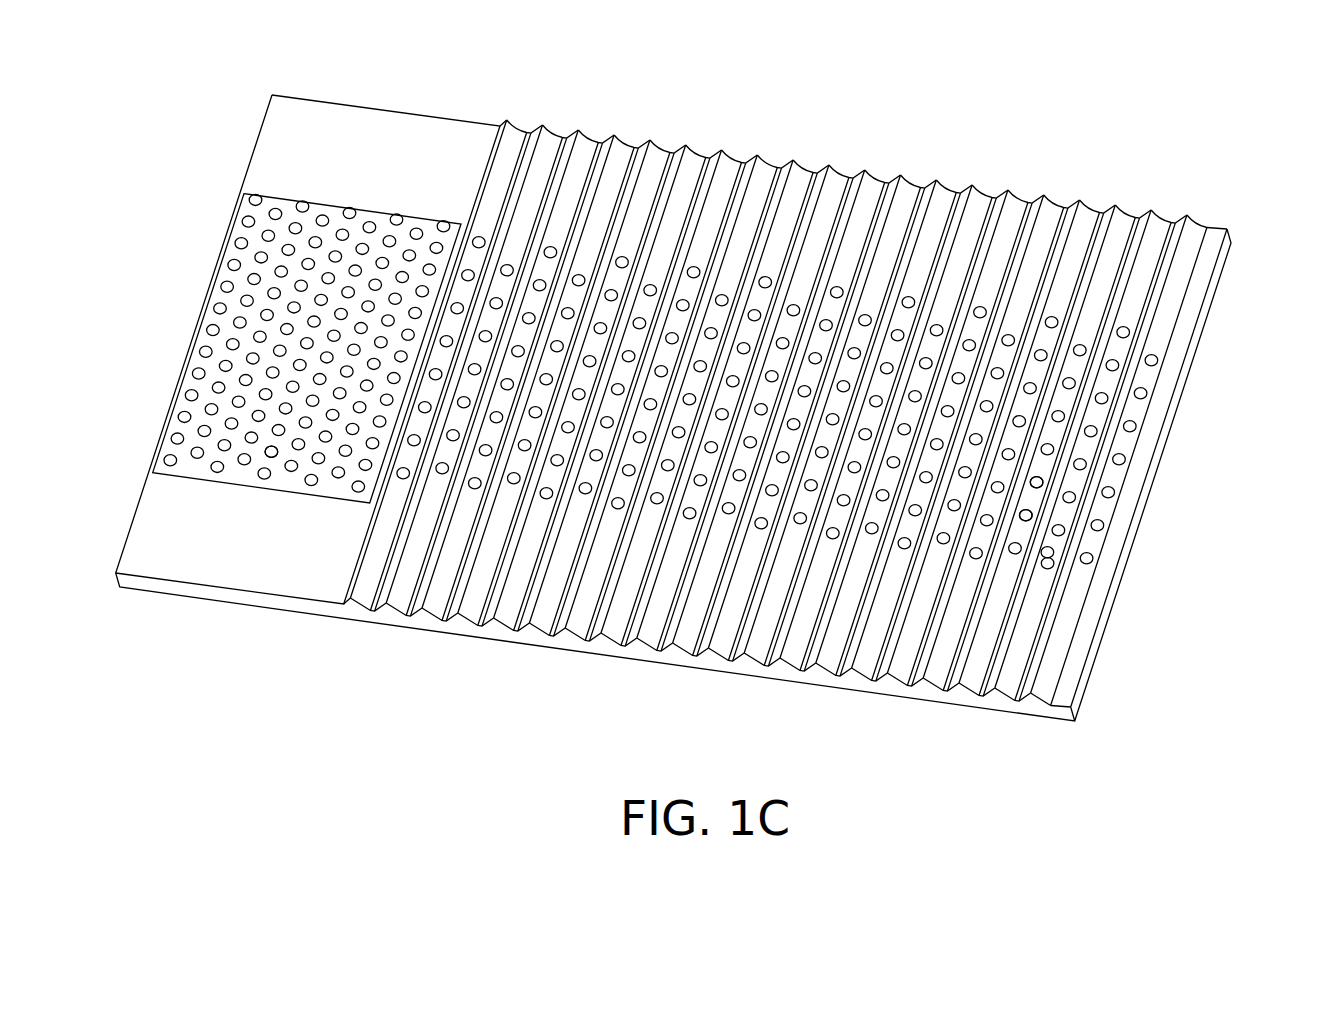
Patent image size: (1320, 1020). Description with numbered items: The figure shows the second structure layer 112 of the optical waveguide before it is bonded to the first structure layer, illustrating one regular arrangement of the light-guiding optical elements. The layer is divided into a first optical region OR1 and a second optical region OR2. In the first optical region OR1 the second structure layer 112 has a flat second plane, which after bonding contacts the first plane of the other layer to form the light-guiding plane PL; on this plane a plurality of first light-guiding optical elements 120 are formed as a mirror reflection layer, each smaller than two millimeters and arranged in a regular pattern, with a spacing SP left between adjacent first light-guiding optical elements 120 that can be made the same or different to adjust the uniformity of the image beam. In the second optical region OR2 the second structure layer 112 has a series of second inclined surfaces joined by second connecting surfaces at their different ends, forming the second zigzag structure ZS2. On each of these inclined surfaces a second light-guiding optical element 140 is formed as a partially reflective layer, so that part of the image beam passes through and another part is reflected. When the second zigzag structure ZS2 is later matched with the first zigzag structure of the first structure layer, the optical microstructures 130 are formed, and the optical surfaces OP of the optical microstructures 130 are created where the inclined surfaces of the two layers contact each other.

The second structure layer 112 is at (1302, 736).
The first optical region OR1 is at (503, 96).
The second optical region OR2 is at (1232, 199).
The light-guiding plane PL is at (203, 413).
The first light-guiding optical elements 120 is at (233, 261).
The spacing SP is at (270, 462).
The optical microstructures 130 is at (1203, 217).
The second zigzag structure ZS2 is at (1172, 302).
The second light-guiding optical elements 140 is at (1137, 423).
The optical surfaces OP is at (1029, 502).